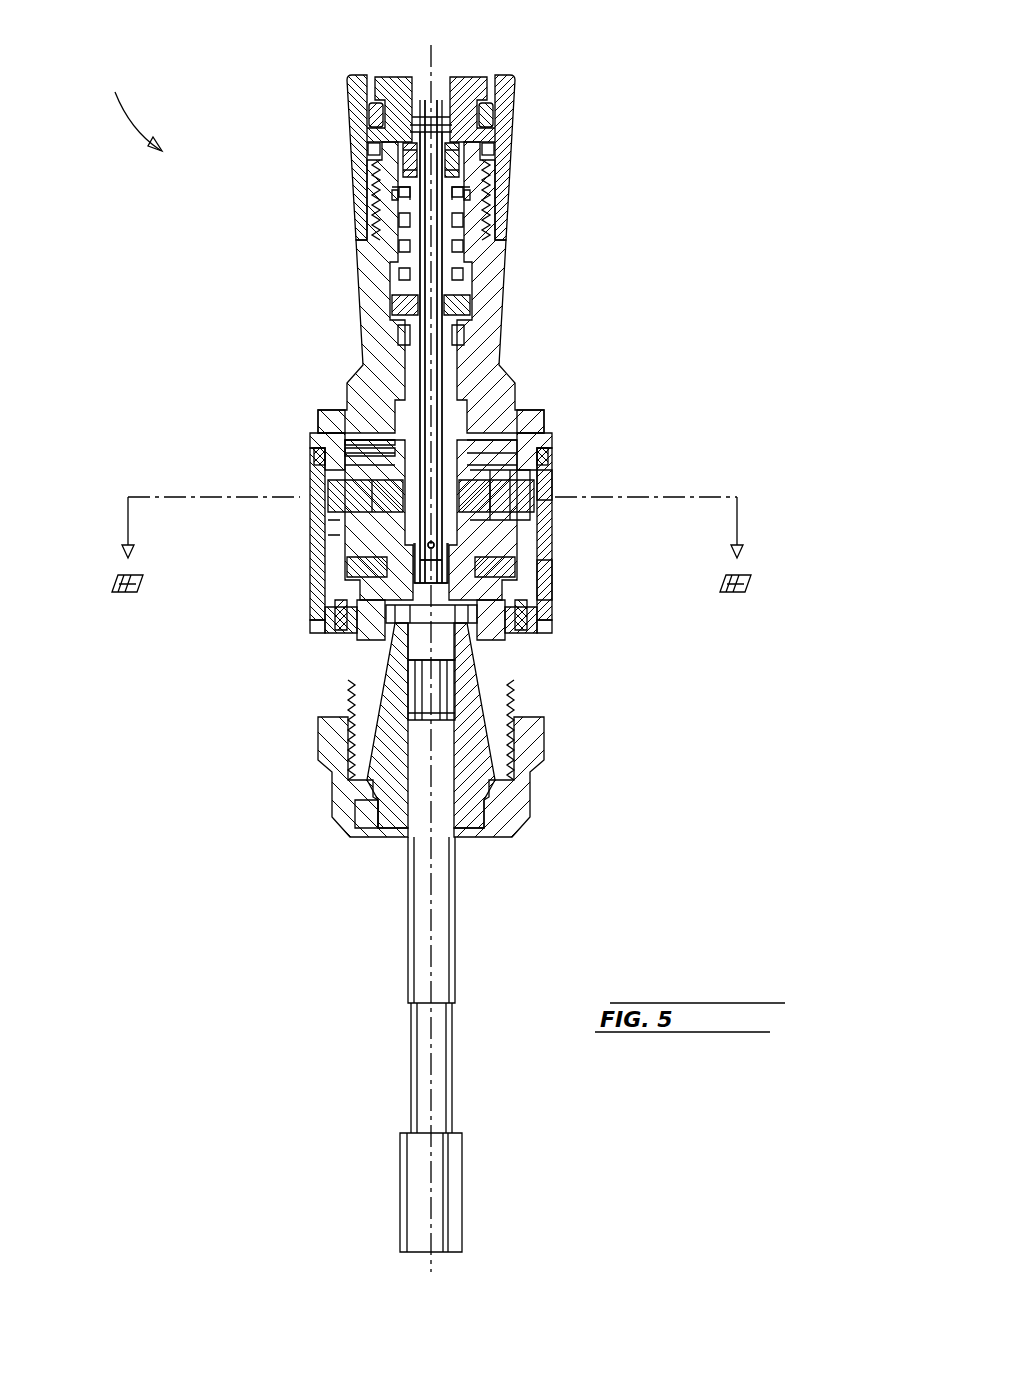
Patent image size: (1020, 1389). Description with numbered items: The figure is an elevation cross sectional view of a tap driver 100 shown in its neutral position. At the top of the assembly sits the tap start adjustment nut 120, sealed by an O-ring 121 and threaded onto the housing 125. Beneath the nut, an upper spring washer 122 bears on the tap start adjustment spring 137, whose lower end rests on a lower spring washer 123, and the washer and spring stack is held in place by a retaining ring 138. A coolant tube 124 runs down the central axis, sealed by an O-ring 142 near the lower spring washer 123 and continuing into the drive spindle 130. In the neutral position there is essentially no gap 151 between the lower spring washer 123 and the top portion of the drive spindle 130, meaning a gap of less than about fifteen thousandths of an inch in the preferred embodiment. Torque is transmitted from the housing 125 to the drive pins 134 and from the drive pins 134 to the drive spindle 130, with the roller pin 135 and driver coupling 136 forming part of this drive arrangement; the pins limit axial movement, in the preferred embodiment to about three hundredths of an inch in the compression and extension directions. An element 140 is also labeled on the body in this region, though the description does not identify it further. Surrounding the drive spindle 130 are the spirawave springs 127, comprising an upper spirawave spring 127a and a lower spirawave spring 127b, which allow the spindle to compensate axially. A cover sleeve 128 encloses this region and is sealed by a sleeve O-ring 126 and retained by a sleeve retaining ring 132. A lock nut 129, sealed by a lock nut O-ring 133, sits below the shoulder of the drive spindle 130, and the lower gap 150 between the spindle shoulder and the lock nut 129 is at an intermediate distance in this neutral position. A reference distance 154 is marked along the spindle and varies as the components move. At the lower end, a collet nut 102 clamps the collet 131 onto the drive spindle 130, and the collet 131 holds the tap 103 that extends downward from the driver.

The tap driver 100 is at (122, 105).
The collet nut 102 is at (520, 820).
The tap 103 is at (445, 1060).
The tap start adjustment nut 120 is at (395, 78).
The O-ring 121 is at (369, 114).
The upper spring washer 122 is at (368, 152).
The lower spring washer 123 is at (395, 200).
The coolant tube 124 is at (525, 433).
The housing 125 is at (530, 412).
The sleeve O-ring 126 is at (314, 457).
The spirawave springs 127 is at (552, 540).
The upper spirawave spring 127a is at (555, 500).
The lower spirawave spring 127b is at (552, 580).
The cover sleeve 128 is at (347, 565).
The lock nut 129 is at (360, 640).
The drive spindle 130 is at (498, 700).
The collet 131 is at (395, 810).
The sleeve retaining ring 132 is at (320, 633).
The lock nut O-ring 133 is at (335, 615).
The drive pin 134 is at (370, 440).
The roller pin 135 is at (335, 500).
The driver coupling 136 is at (345, 452).
The tap start adjustment spring 137 is at (375, 205).
The retaining ring 138 is at (403, 165).
The body 140 is at (475, 340).
The O-ring 142 is at (425, 300).
The lower gap 150 is at (328, 625).
The gap 151 is at (400, 312).
The distance 154 is at (522, 650).